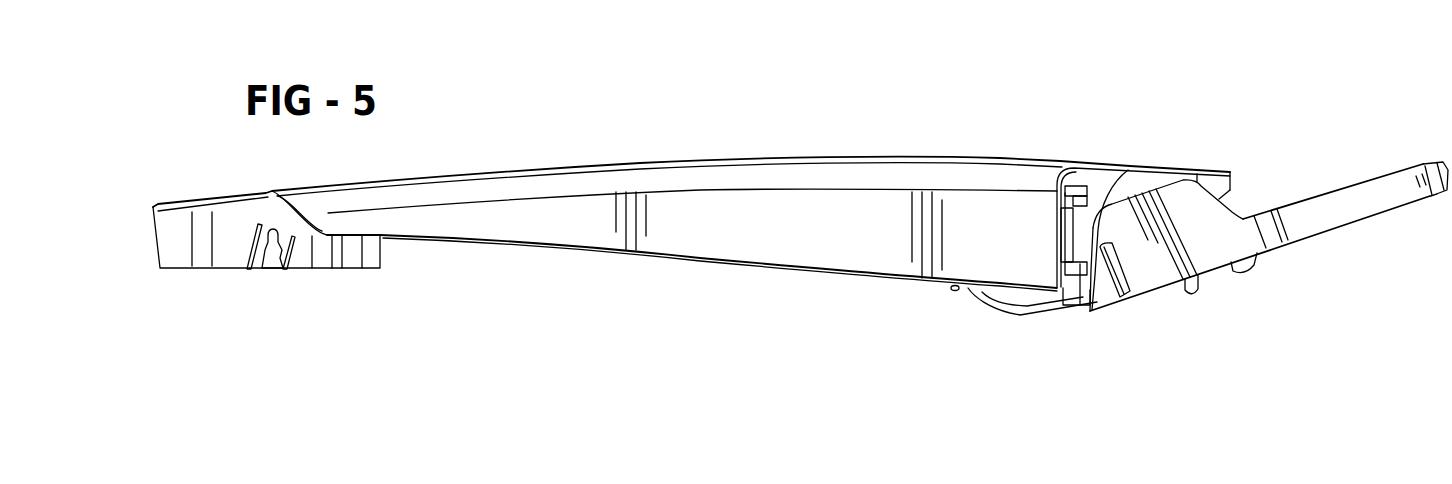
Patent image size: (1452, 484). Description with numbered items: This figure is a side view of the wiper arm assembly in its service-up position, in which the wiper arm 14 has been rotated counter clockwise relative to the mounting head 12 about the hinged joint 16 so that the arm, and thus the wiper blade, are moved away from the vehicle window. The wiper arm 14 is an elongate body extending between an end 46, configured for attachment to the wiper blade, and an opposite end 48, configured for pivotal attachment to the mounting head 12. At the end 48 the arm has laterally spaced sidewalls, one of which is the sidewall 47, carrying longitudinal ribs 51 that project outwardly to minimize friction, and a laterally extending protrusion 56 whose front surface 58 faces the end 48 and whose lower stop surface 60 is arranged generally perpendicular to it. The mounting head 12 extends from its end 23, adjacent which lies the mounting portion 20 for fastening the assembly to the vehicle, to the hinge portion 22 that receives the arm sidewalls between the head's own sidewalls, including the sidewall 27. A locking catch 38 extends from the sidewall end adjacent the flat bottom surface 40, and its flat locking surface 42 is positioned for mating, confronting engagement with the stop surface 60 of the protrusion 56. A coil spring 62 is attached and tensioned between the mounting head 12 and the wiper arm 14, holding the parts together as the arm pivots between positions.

The mounting head 12 is at (1424, 163).
The wiper arm 14 is at (688, 158).
The hinged joint 16 is at (1151, 139).
The mounting portion 20 is at (1440, 200).
The hinge portion 22 is at (1121, 291).
The end of mounting head 23 is at (1443, 166).
The sidewall of mounting head 27 is at (1212, 244).
The locking catch 38 is at (1077, 306).
The bottom surface 40 is at (1198, 294).
The locking surface 42 is at (1093, 270).
The end of wiper arm 46 is at (226, 271).
The sidewall of wiper arm 47 is at (1166, 182).
The end of wiper arm 48 is at (1240, 168).
The longitudinal rib 51 is at (1083, 233).
The protrusion 56 is at (1062, 237).
The front surface 58 is at (1077, 197).
The stop surface 60 is at (1067, 290).
The coil spring 62 is at (1000, 313).